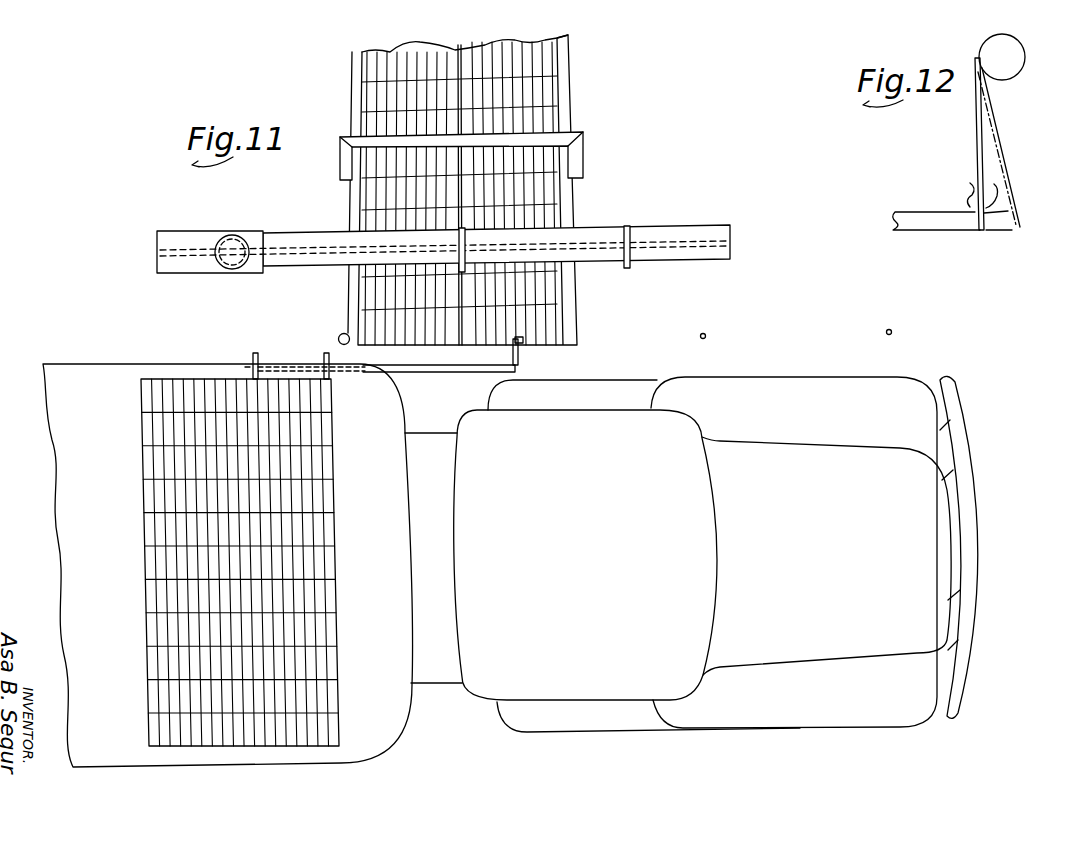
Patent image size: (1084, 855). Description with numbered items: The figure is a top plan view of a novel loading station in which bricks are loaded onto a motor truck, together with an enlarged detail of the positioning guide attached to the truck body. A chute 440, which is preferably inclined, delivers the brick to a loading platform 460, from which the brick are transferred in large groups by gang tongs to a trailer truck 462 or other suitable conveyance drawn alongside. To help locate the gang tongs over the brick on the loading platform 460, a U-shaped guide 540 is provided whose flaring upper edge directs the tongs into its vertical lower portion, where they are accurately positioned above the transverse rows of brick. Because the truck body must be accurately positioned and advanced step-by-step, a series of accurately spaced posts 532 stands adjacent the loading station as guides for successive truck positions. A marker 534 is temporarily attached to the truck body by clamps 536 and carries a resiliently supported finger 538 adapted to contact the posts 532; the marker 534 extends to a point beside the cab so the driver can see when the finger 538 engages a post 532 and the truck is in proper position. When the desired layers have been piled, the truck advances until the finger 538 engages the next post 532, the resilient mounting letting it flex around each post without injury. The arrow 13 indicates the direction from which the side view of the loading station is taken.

In FIG. 11, the arrow 13 is at (647, 125).
In FIG. 11, the chute 440 is at (566, 74).
In FIG. 11, the U-shaped guide 540 is at (578, 164).
In FIG. 11, the loading platform 460 is at (575, 298).
In FIG. 11, the trailer truck 462 is at (96, 364).
In FIG. 11, the clamps 536 is at (323, 354).
In FIG. 11, the marker 534 is at (432, 371).
In FIG. 12, the marker 534 is at (915, 229).
In FIG. 11, the resiliently supported finger 538 is at (512, 352).
In FIG. 12, the resiliently supported finger 538 is at (977, 135).
In FIG. 11, the posts 532 is at (524, 343).
In FIG. 12, the posts 532 is at (1013, 60).